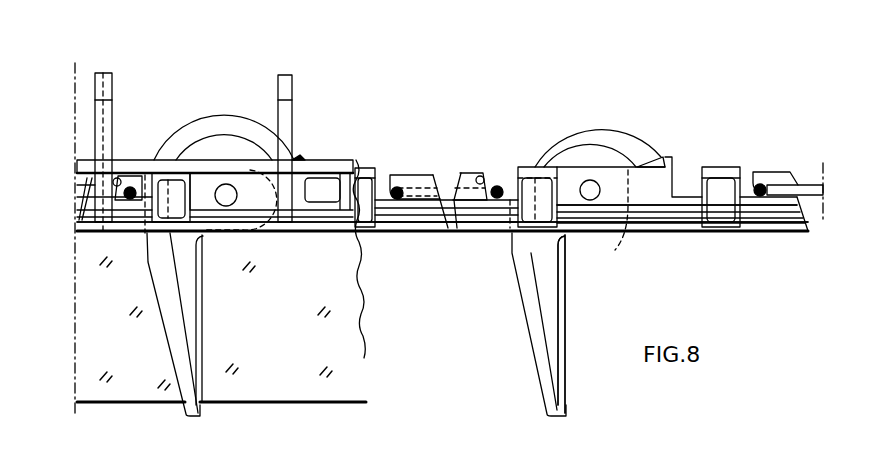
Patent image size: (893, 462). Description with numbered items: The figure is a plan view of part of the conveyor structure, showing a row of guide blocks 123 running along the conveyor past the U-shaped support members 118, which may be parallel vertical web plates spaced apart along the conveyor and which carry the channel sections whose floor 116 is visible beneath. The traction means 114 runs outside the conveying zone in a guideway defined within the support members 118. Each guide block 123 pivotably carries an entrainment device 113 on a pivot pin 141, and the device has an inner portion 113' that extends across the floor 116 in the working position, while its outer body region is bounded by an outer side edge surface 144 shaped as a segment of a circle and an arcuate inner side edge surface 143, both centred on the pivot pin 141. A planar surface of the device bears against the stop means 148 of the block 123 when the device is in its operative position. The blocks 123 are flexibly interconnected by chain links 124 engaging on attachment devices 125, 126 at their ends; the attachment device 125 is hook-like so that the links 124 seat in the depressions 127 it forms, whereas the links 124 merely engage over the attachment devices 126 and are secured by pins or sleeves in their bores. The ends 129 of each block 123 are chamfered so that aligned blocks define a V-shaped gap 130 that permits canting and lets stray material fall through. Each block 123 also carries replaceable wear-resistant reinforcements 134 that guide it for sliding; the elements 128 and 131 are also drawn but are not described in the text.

The entrainment device 113 is at (338, 324).
The inner portion 113' is at (585, 324).
The traction means 114 is at (468, 137).
The floor 116 is at (288, 345).
The support member 118 is at (105, 83).
The guide block 123 is at (653, 188).
The chain link 124 is at (398, 197).
The attachment device 125 is at (408, 175).
The attachment device 126 is at (497, 186).
The depression 127 is at (412, 200).
The clamp block 128 is at (482, 178).
The end 129 is at (452, 177).
The V-shaped gap 130 is at (448, 203).
The rail 131 is at (312, 227).
The wear-resistant reinforcement 134 is at (160, 187).
The pivot pin 141 is at (223, 190).
The inner side edge surface 143 is at (578, 113).
The outer side edge surface 144 is at (617, 228).
The stop means 148 is at (665, 157).